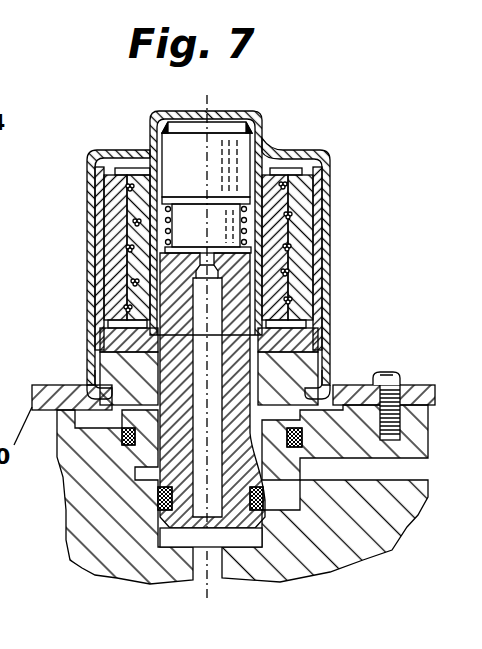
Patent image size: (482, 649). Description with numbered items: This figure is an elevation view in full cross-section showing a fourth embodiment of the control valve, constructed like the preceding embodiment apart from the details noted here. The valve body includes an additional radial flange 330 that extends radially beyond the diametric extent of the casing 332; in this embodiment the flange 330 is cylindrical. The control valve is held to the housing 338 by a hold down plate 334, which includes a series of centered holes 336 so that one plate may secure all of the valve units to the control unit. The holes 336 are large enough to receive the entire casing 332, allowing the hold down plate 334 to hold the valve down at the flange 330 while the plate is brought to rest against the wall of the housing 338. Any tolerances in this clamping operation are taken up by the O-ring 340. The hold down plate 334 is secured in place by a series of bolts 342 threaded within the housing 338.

The radial flange 330 is at (96, 427).
The casing 332 is at (265, 133).
The hold down plate 334 is at (43, 410).
The centered holes 336 is at (88, 392).
The housing 338 is at (66, 480).
The O-ring 340 is at (337, 520).
The bolts 342 is at (402, 373).